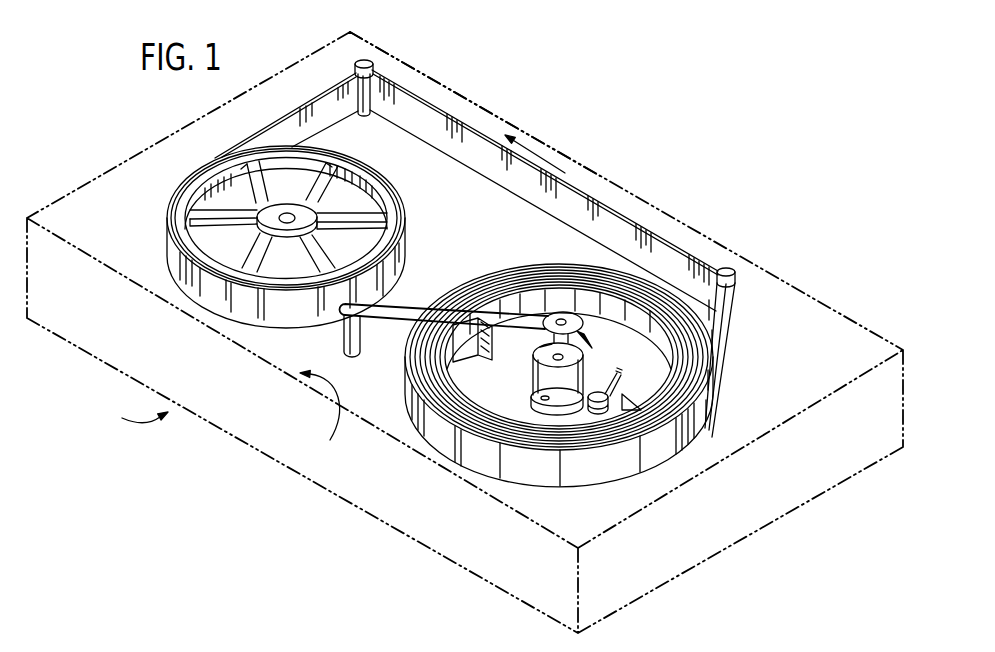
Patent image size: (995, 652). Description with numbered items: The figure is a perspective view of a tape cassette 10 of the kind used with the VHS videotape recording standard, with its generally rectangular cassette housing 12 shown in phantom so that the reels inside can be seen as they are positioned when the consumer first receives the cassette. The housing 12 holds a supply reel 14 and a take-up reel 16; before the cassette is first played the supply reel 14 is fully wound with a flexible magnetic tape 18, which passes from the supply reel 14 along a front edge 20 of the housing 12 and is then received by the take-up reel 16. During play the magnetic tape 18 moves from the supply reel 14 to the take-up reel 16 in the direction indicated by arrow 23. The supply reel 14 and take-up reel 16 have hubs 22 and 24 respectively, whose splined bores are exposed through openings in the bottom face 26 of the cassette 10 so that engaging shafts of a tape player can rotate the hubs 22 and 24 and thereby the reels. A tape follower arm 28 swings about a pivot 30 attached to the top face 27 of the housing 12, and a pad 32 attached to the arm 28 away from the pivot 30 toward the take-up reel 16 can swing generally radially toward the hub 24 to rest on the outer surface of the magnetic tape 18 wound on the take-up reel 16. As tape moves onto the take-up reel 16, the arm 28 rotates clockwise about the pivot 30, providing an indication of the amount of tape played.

The tape cassette 10 is at (666, 186).
The cassette housing 12 is at (658, 507).
The supply reel 14 is at (450, 383).
The take-up reel 16 is at (168, 249).
The magnetic tape 18 is at (417, 118).
The front edge 20 is at (414, 44).
The hub 22 is at (590, 344).
The arrow 23 is at (542, 155).
The hub 24 is at (322, 208).
The bottom face 26 is at (132, 416).
The top face 27 is at (320, 419).
The tape follower arm 28 is at (411, 306).
The pivot 30 is at (562, 312).
The pad 32 is at (351, 343).